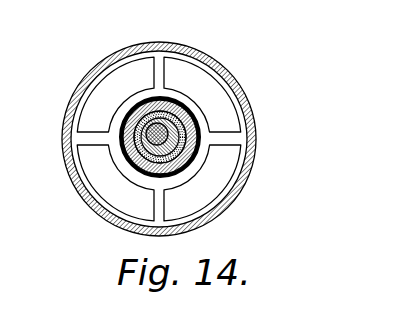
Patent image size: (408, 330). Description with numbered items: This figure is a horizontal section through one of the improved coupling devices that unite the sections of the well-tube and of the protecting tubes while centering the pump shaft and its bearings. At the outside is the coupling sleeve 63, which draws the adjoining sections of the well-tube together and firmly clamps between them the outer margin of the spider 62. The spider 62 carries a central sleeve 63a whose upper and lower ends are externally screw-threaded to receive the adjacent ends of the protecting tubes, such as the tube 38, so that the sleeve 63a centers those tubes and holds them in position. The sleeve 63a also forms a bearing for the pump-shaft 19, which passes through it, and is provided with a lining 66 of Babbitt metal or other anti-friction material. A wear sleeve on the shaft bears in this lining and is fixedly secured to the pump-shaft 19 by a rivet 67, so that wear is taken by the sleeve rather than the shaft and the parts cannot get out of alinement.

The pump-shaft 19 is at (124, 160).
The tube 38 is at (147, 173).
The spider 62 is at (161, 80).
The coupling sleeve 63 is at (240, 183).
The central sleeve 63a is at (182, 168).
The lining 66 is at (188, 117).
The rivet 67 is at (199, 153).